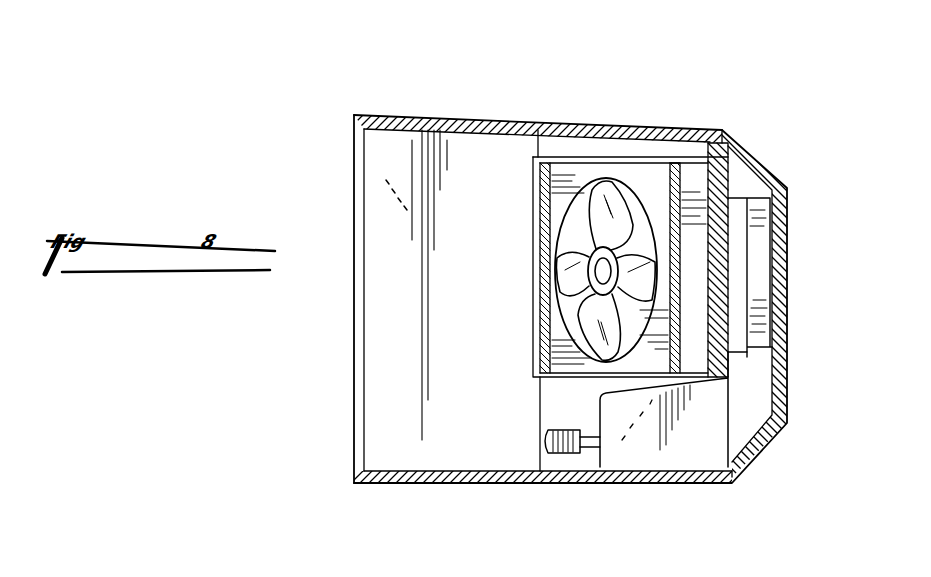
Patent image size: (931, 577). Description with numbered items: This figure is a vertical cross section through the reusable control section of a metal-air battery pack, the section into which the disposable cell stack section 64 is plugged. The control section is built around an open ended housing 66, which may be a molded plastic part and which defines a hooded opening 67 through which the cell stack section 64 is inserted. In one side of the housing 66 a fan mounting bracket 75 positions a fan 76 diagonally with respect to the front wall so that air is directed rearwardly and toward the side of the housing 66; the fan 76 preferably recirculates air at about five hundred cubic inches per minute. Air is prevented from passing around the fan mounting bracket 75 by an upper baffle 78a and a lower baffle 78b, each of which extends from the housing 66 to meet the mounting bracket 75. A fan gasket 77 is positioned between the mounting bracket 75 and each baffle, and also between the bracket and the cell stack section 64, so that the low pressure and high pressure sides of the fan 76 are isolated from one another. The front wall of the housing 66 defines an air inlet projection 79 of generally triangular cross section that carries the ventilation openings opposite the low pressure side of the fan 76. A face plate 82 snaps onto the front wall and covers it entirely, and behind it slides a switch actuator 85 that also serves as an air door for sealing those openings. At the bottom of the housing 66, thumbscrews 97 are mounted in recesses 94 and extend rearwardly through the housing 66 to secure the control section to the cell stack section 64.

The cell stack section 64 is at (707, 81).
The housing 66 is at (563, 120).
The hooded opening 67 is at (390, 161).
The fan mounting bracket 75 is at (575, 190).
The fan 76 is at (588, 272).
The fan gasket 77 is at (537, 174).
The upper baffle 78a is at (632, 155).
The lower baffle 78b is at (553, 408).
The air inlet projection 79 is at (743, 356).
The face plate 82 is at (768, 162).
The switch actuator 85 is at (757, 272).
The recesses 94 is at (650, 455).
The thumbscrews 97 is at (583, 450).